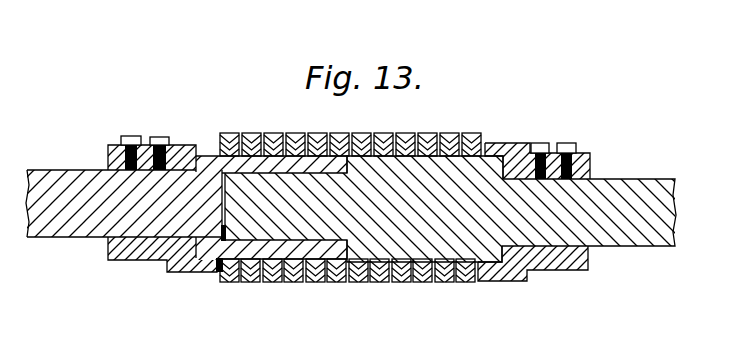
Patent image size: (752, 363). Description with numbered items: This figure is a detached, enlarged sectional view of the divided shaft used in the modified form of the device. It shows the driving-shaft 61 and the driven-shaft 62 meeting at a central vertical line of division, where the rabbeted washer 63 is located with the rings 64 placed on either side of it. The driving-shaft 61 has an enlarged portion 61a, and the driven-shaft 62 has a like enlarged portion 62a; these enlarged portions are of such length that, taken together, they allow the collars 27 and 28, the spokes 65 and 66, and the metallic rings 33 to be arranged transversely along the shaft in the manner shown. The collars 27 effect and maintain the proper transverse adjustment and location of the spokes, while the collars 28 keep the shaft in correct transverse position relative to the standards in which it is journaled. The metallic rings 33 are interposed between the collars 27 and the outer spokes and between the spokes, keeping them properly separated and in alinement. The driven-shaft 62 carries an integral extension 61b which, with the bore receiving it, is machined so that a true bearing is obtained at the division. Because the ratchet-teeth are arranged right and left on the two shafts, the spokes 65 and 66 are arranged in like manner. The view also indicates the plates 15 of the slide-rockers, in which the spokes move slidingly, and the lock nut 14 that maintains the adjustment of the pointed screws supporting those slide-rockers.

The driven-shaft 62 is at (55, 172).
The collars 28 is at (115, 145).
The collars 27 is at (167, 262).
The enlarged portion of the driven-shaft 62a is at (251, 132).
The integral extension of the driven-shaft 61b is at (217, 273).
The driving-shaft 61 is at (637, 192).
The enlarged portion of the driving-shaft 61a is at (497, 143).
The plates of the slide-rockers 15 is at (243, 127).
The spokes 66 is at (315, 132).
The spokes 65 is at (405, 132).
The lock nut 14 is at (458, 128).
The metallic rings 33 is at (320, 287).
The rabbeted washer 63 is at (345, 285).
The rings 64 is at (357, 283).